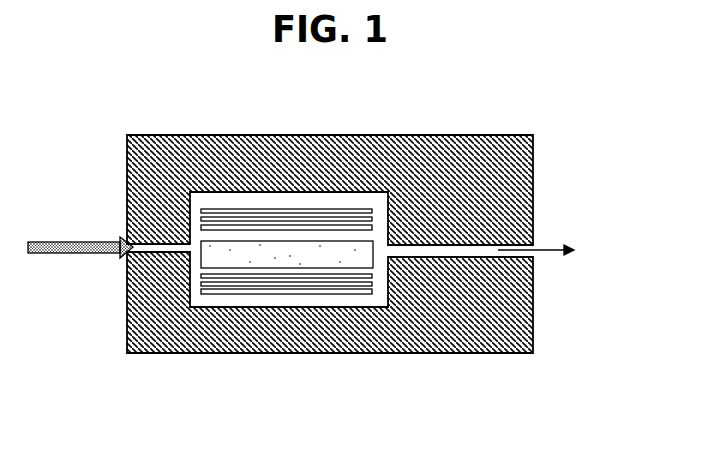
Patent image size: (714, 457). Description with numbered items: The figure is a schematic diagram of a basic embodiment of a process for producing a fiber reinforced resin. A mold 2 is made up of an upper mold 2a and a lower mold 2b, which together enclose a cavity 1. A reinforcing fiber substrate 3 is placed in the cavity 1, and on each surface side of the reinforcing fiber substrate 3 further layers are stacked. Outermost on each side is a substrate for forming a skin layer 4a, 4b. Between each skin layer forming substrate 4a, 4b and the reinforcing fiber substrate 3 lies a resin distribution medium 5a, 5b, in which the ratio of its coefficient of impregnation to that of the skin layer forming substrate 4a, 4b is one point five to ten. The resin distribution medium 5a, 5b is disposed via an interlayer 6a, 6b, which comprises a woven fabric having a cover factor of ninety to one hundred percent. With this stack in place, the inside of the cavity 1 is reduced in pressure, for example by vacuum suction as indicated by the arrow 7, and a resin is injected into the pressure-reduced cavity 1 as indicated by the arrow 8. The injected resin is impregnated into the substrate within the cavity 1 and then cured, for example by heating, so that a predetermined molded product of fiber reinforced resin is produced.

The cavity 1 is at (326, 242).
The mold 2 is at (330, 292).
The upper mold 2a is at (165, 233).
The lower mold 2b is at (252, 343).
The reinforcing fiber substrate 3 is at (215, 248).
The skin layer forming substrate 4a is at (337, 210).
The skin layer forming substrate 4b is at (347, 295).
The resin distribution medium 5a is at (373, 228).
The resin distribution medium 5b is at (372, 277).
The interlayer 6a is at (373, 218).
The interlayer 6b is at (372, 285).
The arrow 7 is at (545, 245).
The arrow 8 is at (52, 255).